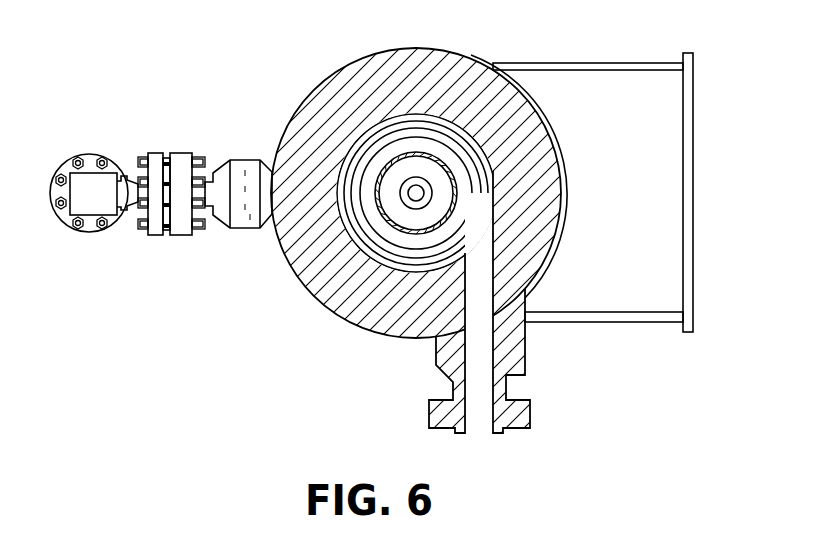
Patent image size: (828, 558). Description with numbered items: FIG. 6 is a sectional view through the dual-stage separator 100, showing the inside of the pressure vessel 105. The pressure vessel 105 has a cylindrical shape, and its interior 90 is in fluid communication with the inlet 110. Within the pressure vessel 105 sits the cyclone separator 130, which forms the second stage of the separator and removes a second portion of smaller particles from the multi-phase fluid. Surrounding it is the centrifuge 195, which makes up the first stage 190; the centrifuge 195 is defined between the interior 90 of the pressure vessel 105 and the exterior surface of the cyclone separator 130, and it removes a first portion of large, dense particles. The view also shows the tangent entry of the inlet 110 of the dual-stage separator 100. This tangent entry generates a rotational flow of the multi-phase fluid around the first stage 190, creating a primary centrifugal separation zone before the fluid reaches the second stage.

The dual-stage separator 100 is at (252, 29).
The pressure vessel 105 is at (424, 60).
The interior 90 is at (340, 283).
The inlet 110 is at (513, 413).
The cyclone separator 130 is at (448, 177).
The first stage 190 is at (468, 217).
The centrifuge 195 is at (493, 170).